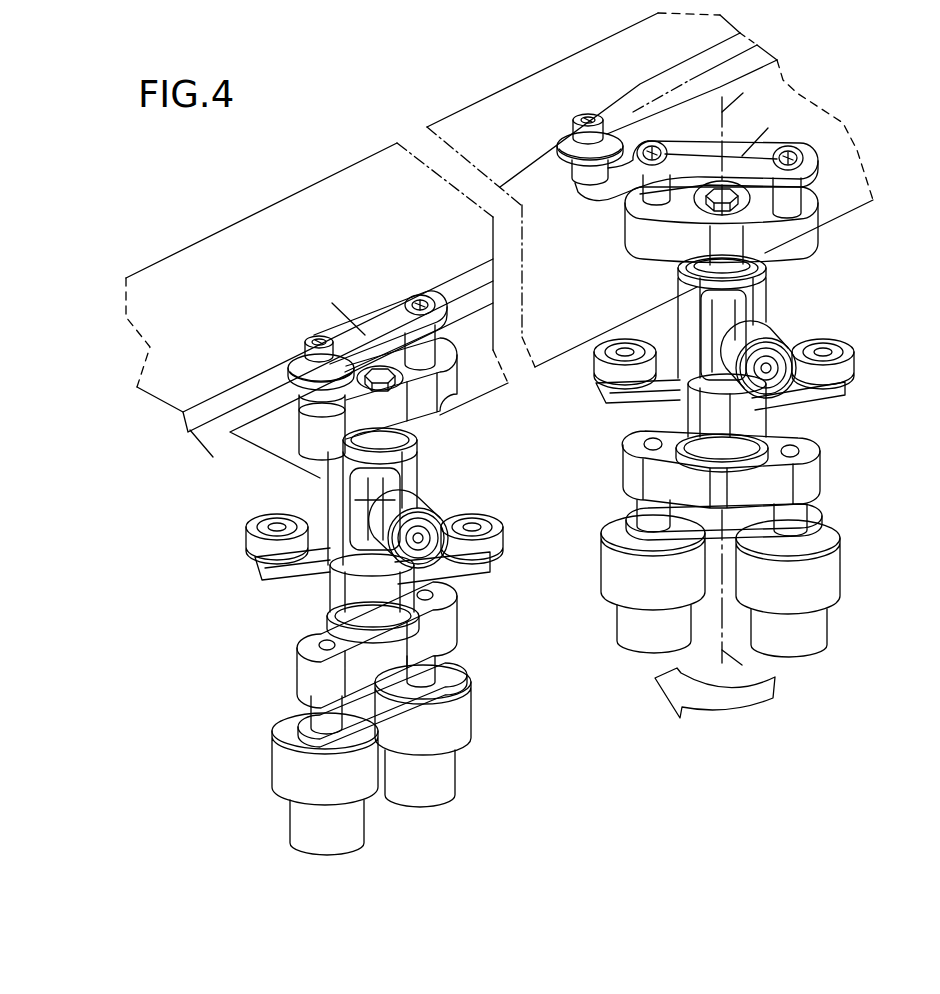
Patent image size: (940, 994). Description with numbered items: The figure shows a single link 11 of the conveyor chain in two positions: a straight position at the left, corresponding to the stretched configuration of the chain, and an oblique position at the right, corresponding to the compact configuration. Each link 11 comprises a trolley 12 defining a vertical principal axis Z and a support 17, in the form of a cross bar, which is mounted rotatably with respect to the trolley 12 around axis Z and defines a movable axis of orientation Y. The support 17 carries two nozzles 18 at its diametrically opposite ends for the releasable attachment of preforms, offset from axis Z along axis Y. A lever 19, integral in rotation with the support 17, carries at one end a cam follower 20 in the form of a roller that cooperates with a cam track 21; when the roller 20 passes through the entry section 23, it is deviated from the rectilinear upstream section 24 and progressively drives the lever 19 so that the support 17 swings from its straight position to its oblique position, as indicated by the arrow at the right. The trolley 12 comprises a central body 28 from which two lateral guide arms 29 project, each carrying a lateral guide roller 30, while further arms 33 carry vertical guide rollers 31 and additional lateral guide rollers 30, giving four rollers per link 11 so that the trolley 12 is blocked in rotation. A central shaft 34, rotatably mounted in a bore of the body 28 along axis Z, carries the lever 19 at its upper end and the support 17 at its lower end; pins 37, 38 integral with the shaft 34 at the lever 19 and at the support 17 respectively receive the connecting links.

The link 11 is at (862, 329).
The trolley 12 is at (770, 295).
The support 17 is at (808, 477).
The nozzle 18 is at (620, 625).
The lever 19 is at (625, 168).
The cam follower 20 is at (570, 163).
The cam track 21 is at (610, 101).
The entry section 23 is at (591, 375).
The rectilinear upstream section 24 is at (236, 380).
The central body 28 is at (747, 425).
The lateral guide arm 29 is at (652, 393).
The lateral guide roller 30 is at (842, 366).
The vertical guide roller 31 is at (773, 340).
The arm 33 is at (717, 323).
The central shaft 34 is at (700, 450).
The pin 37 is at (792, 197).
The pin 38 is at (643, 506).